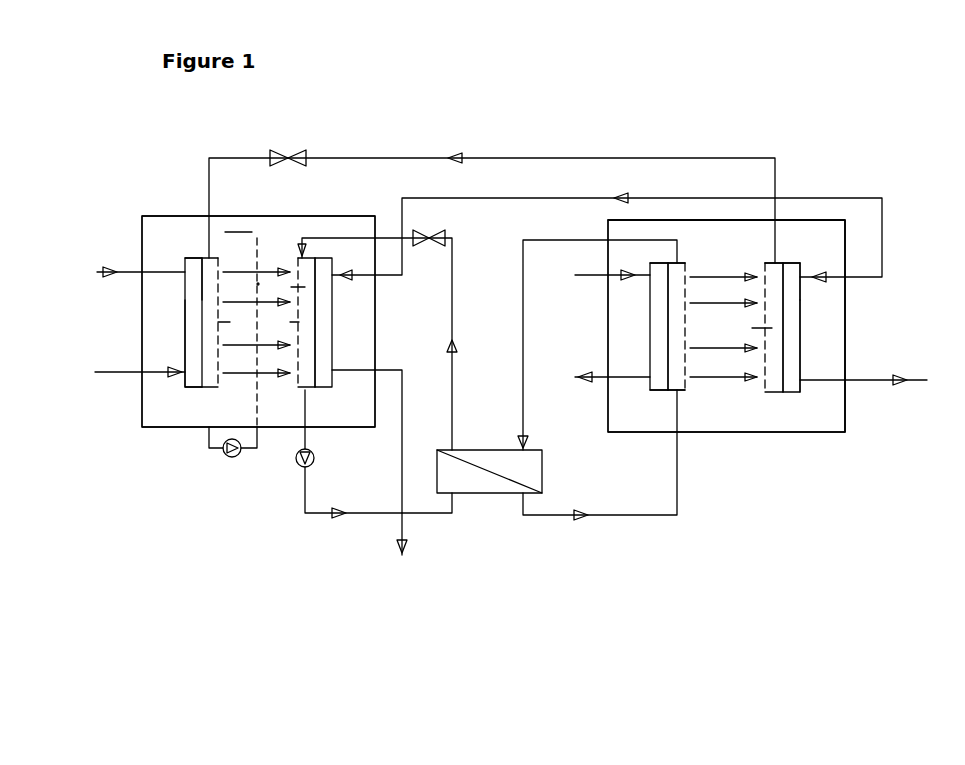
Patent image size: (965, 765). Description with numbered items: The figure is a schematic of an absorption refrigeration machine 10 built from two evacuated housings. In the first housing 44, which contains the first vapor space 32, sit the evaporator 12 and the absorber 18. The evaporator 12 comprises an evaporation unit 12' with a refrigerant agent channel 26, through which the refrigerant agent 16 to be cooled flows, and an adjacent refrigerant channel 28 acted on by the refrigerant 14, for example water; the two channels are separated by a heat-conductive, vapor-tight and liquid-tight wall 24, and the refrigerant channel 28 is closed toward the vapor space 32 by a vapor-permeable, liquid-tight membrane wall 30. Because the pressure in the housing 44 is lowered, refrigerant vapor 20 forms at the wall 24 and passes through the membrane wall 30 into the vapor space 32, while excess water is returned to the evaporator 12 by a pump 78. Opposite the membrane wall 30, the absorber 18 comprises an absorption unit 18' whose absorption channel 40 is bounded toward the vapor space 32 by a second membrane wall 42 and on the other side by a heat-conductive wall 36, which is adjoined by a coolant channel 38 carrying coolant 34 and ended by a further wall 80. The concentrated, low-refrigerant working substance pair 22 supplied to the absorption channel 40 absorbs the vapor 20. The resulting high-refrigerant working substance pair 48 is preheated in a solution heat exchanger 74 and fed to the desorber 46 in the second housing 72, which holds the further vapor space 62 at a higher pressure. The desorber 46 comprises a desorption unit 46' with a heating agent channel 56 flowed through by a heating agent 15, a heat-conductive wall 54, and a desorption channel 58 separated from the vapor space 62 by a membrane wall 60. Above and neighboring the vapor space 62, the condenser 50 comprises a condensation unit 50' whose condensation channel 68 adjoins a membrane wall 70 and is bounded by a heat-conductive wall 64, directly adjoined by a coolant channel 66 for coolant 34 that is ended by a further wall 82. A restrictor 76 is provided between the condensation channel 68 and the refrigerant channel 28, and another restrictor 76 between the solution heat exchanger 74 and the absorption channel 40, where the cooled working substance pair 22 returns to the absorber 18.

The absorption refrigeration machine 10 is at (440, 80).
The evaporator 12 is at (164, 375).
The evaporation unit 12' is at (191, 381).
The refrigerant 14 is at (477, 157).
The heating agent 15 is at (582, 275).
The refrigerant agent 16 is at (118, 268).
The absorber 18 is at (323, 385).
The absorption unit 18' is at (343, 368).
The refrigerant vapor 20 is at (262, 270).
The concentrated, low-refrigerant working substance pair 22 is at (336, 236).
The heat-conductive wall 24 is at (186, 268).
The refrigerant agent channel 26 is at (190, 330).
The refrigerant channel 28 is at (212, 276).
The vapor-permeable, liquid-tight membrane wall 30 is at (237, 325).
The vapor space 32 is at (293, 423).
The coolant 34 is at (407, 527).
The heat-conductive wall 36 is at (331, 272).
The coolant channel 38 is at (332, 308).
The absorption channel 40 is at (281, 286).
The vapor-permeable, liquid-tight membrane wall 42 is at (279, 325).
The housing 44 is at (187, 214).
The desorber 46 is at (634, 382).
The desorption unit 46' is at (661, 370).
The high-refrigerant working substance pair 48 is at (375, 515).
The condenser 50 is at (753, 384).
The condensation unit 50' is at (796, 382).
The heat-conductive wall 54 is at (667, 274).
The heating agent channel 56 is at (655, 303).
The desorption channel 58 is at (679, 377).
The vapor-permeable, liquid-tight membrane wall 60 is at (690, 278).
The further vapor space 62 is at (833, 426).
The heat-conductive wall 64 is at (797, 273).
The coolant channel 66 is at (800, 308).
The condensation channel 68 is at (749, 331).
The vapor-permeable, liquid-tight membrane wall 70 is at (768, 273).
The housing 72 is at (849, 403).
The solution heat exchanger 74 is at (485, 457).
The restrictor 76 is at (296, 150).
The pump 78 is at (233, 468).
The further wall 80 is at (334, 345).
The further wall 82 is at (800, 342).